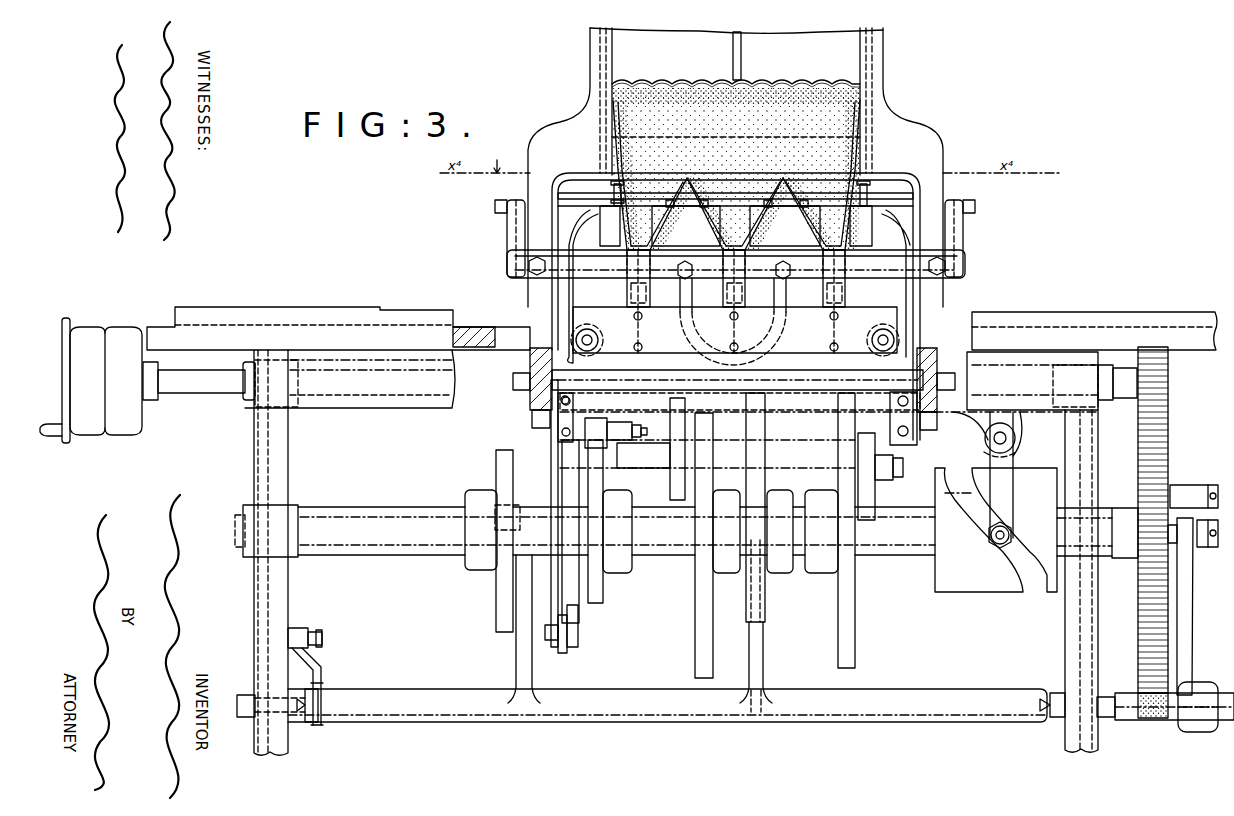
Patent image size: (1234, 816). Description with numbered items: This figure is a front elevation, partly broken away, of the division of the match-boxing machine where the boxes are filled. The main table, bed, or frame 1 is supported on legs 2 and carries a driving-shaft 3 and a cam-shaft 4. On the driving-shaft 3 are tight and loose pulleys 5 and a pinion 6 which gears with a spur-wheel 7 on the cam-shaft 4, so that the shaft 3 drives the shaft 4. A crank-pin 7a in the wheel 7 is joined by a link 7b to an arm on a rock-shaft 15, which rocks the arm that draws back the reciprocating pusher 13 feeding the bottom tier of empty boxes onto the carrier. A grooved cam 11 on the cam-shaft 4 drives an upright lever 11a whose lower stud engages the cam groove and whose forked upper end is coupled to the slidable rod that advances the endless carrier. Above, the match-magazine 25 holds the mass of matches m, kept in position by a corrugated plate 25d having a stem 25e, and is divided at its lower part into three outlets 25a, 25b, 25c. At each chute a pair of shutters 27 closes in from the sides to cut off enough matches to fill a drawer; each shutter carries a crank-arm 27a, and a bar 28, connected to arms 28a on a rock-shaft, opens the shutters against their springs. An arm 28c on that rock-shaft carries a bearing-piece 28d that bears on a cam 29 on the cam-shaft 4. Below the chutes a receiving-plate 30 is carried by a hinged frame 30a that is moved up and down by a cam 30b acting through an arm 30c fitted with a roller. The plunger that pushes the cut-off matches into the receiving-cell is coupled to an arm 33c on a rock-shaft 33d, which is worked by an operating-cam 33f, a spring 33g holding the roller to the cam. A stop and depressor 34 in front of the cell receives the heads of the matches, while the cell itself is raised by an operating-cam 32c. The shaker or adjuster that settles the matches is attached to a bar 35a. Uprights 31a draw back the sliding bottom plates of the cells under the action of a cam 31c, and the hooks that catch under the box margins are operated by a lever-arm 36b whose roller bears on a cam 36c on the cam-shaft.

The main table, bed, or frame 1 is at (682, 358).
The legs 2 is at (1098, 660).
The driving-shaft 3 is at (199, 395).
The cam-shaft 4 is at (686, 531).
The tight and loose pulleys 5 is at (110, 326).
The pinion 6 is at (1168, 362).
The spur-wheel 7 is at (1136, 620).
The crank-pin 7a is at (1190, 485).
The link 7b is at (1206, 548).
The grooved cam 11 is at (996, 530).
The upright lever 11a is at (1014, 452).
The pusher 13 is at (1194, 634).
The rock-shaft 15 is at (1216, 733).
The match-magazine 25 is at (884, 64).
The outlet 25a is at (666, 190).
The outlet 25b is at (748, 186).
The outlet 25c is at (826, 195).
The corrugated plate 25d is at (788, 82).
The stem 25e is at (735, 31).
The shutters 27 is at (652, 248).
The crank-arm 27a is at (750, 223).
The bar 28 is at (600, 195).
The arms 28a is at (552, 296).
The arm 28c is at (551, 470).
The bearing-piece 28d is at (582, 646).
The cam 29 is at (571, 531).
The receiving-plate 30 is at (735, 321).
The frame 30a is at (980, 243).
The cam 30b is at (769, 507).
The arm 30c is at (825, 390).
The uprights 31a is at (915, 445).
The cam 31c is at (875, 486).
The operating-cam 32c is at (695, 605).
The arm 33c is at (516, 662).
The rock-shaft 33d is at (735, 705).
The operating-cam 33f is at (496, 602).
The spring 33g is at (326, 672).
The stop and depressor 34 is at (672, 482).
The bar 35a is at (856, 616).
The lever-arm 36b is at (630, 448).
The cam 36c is at (598, 552).
The mass of matches m is at (736, 169).